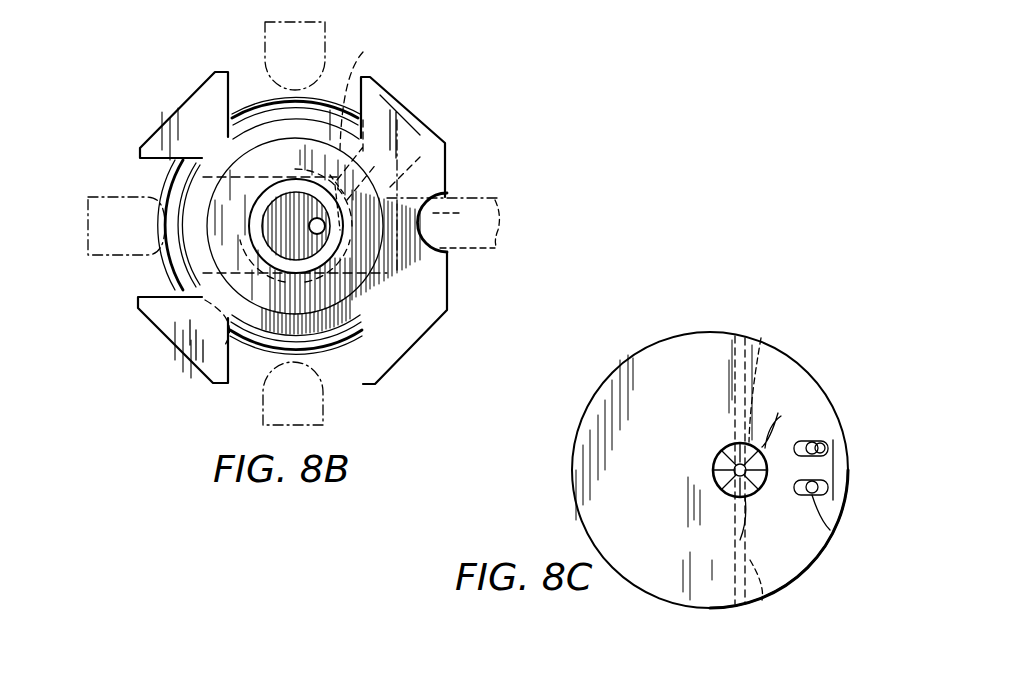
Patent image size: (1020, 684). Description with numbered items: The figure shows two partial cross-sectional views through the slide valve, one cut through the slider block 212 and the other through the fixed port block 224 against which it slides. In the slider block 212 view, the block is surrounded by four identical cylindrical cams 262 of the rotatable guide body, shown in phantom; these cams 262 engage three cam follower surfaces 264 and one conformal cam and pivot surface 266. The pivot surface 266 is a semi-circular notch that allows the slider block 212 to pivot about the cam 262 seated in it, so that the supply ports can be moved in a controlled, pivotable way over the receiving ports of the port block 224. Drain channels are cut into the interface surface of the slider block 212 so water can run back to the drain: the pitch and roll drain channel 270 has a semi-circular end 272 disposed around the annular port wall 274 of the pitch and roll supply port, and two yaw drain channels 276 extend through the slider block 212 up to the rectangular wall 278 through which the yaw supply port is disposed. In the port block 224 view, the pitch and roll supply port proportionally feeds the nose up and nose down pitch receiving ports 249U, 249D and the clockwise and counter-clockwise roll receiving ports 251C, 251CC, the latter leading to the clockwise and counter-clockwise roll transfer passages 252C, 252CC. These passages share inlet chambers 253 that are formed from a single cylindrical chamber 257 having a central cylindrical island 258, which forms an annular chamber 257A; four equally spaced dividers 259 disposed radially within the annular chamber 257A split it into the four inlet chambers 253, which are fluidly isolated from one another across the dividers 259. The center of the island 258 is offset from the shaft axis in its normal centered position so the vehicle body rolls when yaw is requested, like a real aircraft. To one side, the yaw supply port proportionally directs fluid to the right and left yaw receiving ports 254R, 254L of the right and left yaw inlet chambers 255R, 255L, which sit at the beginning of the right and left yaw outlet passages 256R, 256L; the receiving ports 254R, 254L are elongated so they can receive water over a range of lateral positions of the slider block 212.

In FIG. 8B, the slider block 212 is at (425, 128).
In FIG. 8B, the cylindrical cams 262 is at (266, 72).
In FIG. 8B, the cam follower surfaces 264 is at (252, 100).
In FIG. 8B, the conformal cam and pivot surface 266 is at (448, 236).
In FIG. 8B, the pitch and roll drain channel 270 is at (190, 355).
In FIG. 8B, the semi-circular end 272 is at (398, 103).
In FIG. 8B, the annular port wall 274 is at (378, 118).
In FIG. 8B, the yaw drain channels 276 is at (456, 172).
In FIG. 8B, the rectangular wall 278 is at (483, 195).
In FIG. 8C, the fixed port block 224 is at (704, 333).
In FIG. 8C, the nose up pitch receiving port 249U is at (714, 473).
In FIG. 8C, the nose down pitch receiving port 249D is at (779, 525).
In FIG. 8C, the clockwise roll receiving port 251C is at (748, 445).
In FIG. 8C, the counter-clockwise roll receiving port 251CC is at (738, 500).
In FIG. 8C, the clockwise roll transfer passage 252C is at (760, 340).
In FIG. 8C, the counter-clockwise roll transfer passage 252CC is at (755, 585).
In FIG. 8C, the inlet chambers 253 is at (716, 488).
In FIG. 8C, the right yaw receiving port 254R is at (840, 448).
In FIG. 8C, the left yaw receiving port 254L is at (822, 490).
In FIG. 8C, the right yaw inlet chamber 255R is at (812, 441).
In FIG. 8C, the left yaw inlet chamber 255L is at (830, 500).
In FIG. 8C, the right yaw outlet passage 256R is at (816, 463).
In FIG. 8C, the left yaw outlet passage 256L is at (818, 527).
In FIG. 8C, the single cylindrical chamber 257 is at (734, 444).
In FIG. 8C, the annular chamber 257A is at (727, 443).
In FIG. 8C, the central cylindrical island 258 is at (805, 442).
In FIG. 8C, the dividers 259 is at (714, 460).